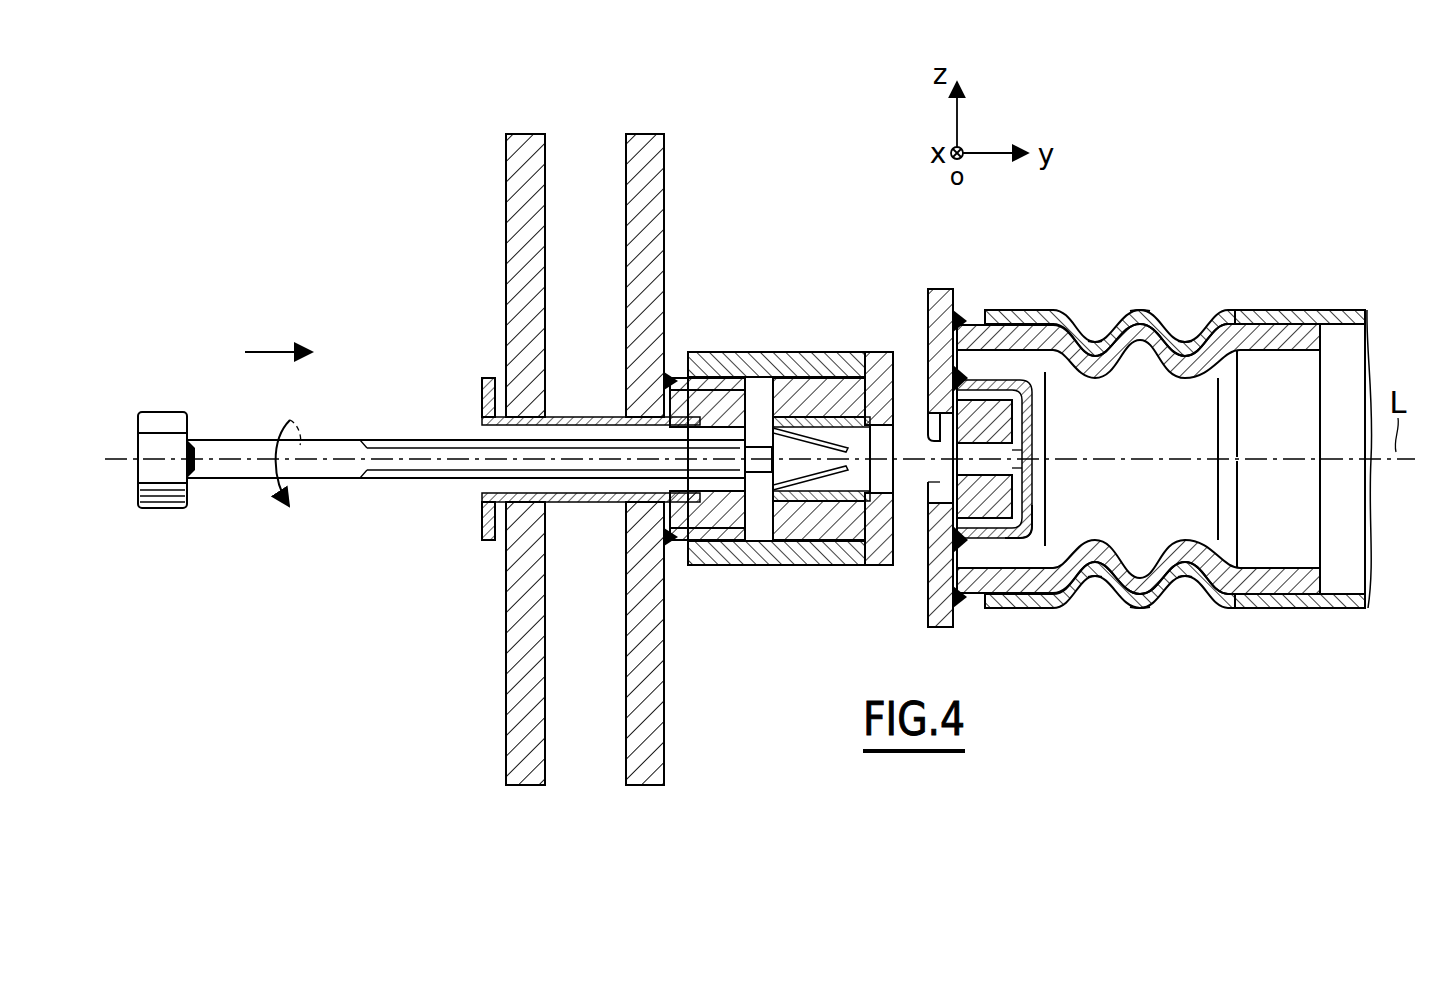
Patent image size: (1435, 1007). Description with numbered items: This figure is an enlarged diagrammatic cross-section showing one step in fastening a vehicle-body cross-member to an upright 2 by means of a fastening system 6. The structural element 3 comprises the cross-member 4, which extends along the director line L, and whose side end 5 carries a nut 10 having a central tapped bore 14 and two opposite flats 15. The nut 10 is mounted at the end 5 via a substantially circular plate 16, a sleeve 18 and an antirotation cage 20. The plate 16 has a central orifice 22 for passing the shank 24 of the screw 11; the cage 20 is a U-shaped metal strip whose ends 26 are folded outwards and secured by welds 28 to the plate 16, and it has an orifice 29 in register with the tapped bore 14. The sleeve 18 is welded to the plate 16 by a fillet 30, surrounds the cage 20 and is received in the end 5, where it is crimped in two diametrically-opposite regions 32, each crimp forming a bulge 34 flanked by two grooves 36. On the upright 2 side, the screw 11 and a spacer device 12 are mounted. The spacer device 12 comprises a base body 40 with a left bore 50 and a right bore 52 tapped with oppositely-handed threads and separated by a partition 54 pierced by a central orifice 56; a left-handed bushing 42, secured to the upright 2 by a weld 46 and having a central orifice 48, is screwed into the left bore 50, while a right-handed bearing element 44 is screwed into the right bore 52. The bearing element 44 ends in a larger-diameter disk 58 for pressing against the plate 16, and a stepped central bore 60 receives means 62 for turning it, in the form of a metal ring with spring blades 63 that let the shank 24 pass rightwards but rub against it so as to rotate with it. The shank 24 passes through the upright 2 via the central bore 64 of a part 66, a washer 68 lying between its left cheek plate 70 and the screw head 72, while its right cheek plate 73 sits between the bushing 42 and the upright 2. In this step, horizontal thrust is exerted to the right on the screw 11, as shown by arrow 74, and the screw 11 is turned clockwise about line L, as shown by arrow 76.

The upright 2 is at (670, 187).
The structural element 3 is at (1164, 431).
The cross-member 4 is at (1283, 310).
The side end of the cross-member 5 is at (1138, 459).
The fastening system 6 is at (1002, 452).
The nut 10 is at (1027, 428).
The screw 11 is at (455, 441).
The spacer device 12 is at (781, 467).
The central tapped bore 14 is at (953, 455).
The flats 15 is at (1038, 392).
The plate 16 is at (922, 482).
The sleeve 18 is at (1180, 545).
The antirotation cage 20 is at (1033, 499).
The central orifice 22 is at (928, 425).
The shank 24 is at (571, 494).
The ends of the antirotation cage 26 is at (1003, 380).
The welds 28 is at (958, 332).
The orifice 29 is at (1034, 468).
The fillet 30 is at (972, 320).
The crimping regions 32 is at (1110, 459).
The bulge 34 is at (1142, 310).
The grooves 36 is at (1092, 330).
The base body 40 is at (794, 452).
The bushing 42 is at (705, 548).
The bearing element 44 is at (795, 565).
The weld 46 is at (670, 548).
The central orifice 48 is at (714, 398).
The left bore 50 is at (726, 385).
The right bore 52 is at (803, 383).
The partition 54 is at (479, 460).
The central orifice 56 is at (777, 541).
The disk 58 is at (878, 566).
The stepped central bore 60 is at (876, 385).
The means for turning the bearing element 62 is at (815, 505).
The spring blades 63 is at (830, 398).
The central bore 64 is at (596, 443).
The part 66 is at (572, 548).
The washer 68 is at (482, 527).
The left cheek plate 70 is at (497, 400).
The head 72 is at (178, 420).
The right cheek plate 73 is at (640, 524).
The arrow 74 is at (256, 350).
The arrow 76 is at (292, 420).